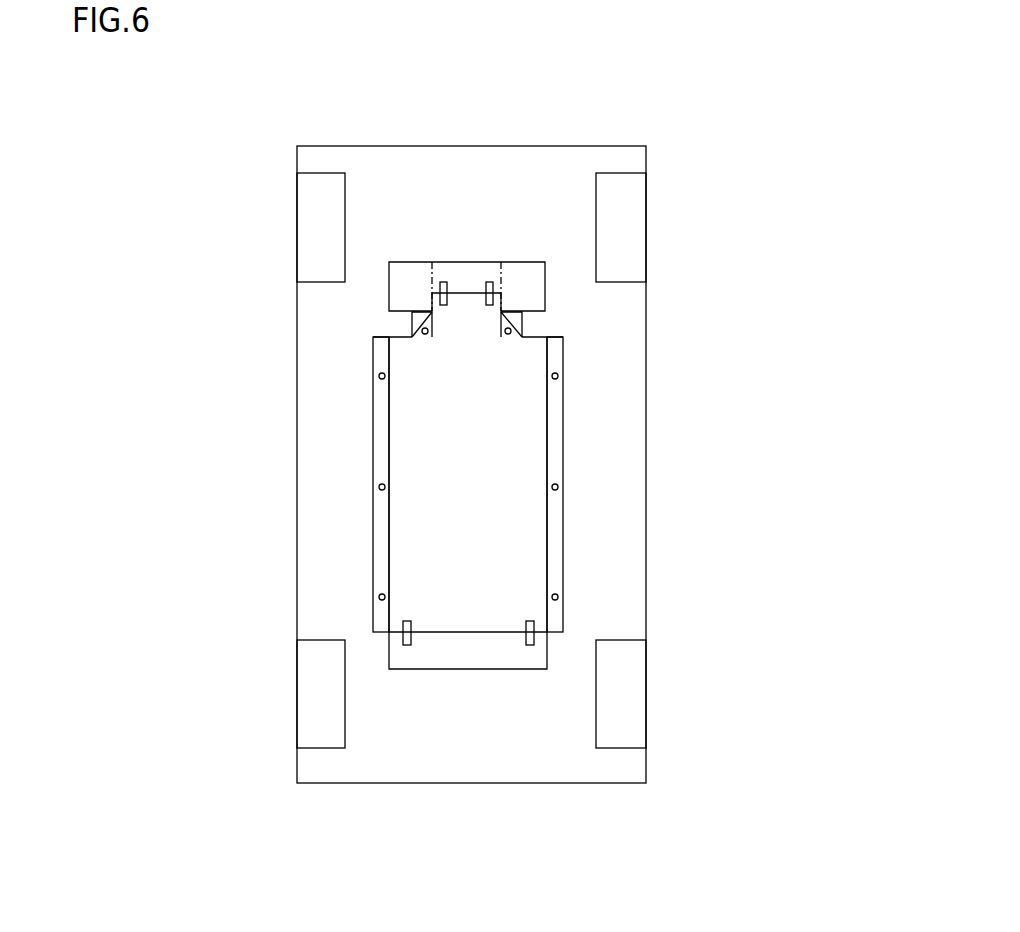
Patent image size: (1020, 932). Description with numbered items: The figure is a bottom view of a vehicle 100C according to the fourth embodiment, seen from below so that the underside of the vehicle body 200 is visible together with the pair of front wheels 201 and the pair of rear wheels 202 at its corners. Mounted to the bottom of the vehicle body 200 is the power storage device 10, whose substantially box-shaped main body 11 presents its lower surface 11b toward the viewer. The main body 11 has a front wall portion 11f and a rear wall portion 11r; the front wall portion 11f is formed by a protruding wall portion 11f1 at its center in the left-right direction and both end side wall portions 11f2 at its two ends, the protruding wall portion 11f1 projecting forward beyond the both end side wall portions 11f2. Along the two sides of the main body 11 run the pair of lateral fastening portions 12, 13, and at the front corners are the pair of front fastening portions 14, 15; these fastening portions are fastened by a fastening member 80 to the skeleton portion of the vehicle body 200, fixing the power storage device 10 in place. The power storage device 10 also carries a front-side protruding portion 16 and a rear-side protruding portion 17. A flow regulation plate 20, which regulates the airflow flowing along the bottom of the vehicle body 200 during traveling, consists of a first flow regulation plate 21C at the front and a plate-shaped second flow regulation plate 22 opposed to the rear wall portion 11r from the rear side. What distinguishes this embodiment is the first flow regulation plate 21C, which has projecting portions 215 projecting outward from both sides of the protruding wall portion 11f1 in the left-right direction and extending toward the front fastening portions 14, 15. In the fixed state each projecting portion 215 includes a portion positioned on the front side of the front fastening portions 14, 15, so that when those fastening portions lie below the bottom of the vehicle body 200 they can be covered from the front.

The vehicle 100C is at (747, 122).
The vehicle body 200 is at (646, 387).
The front wheels 201 is at (310, 237).
The rear wheels 202 is at (310, 702).
The power storage device 10 is at (565, 533).
The main body 11 is at (543, 334).
The front wall portion 11f is at (337, 207).
The protruding wall portion 11f1 is at (460, 290).
The both end side wall portions 11f2 is at (403, 333).
The lower surface 11b is at (427, 501).
The rear wall portion 11r is at (466, 632).
The lateral fastening portion 12 is at (373, 454).
The lateral fastening portion 13 is at (563, 455).
The front fastening portion 14 is at (416, 326).
The front fastening portion 15 is at (517, 330).
The front-side protruding portion 16 is at (489, 281).
The rear-side protruding portion 17 is at (406, 645).
The fastening member 80 is at (560, 377).
The flow regulation plate 20 is at (463, 465).
The first flow regulation plate 21C is at (470, 262).
The projecting portion 215 is at (412, 262).
The second flow regulation plate 22 is at (520, 669).